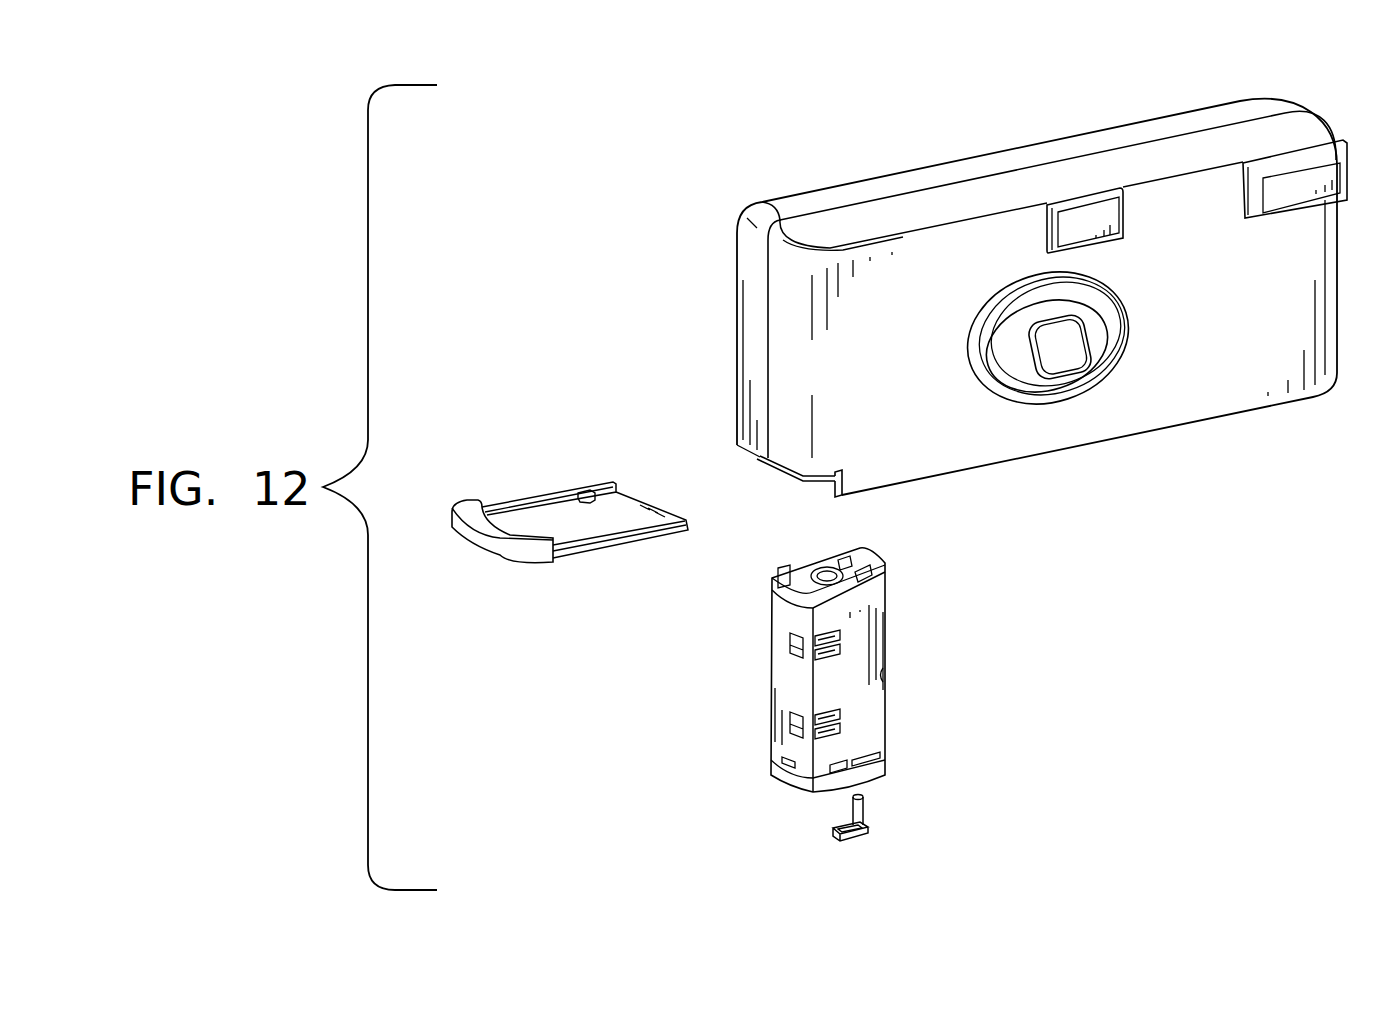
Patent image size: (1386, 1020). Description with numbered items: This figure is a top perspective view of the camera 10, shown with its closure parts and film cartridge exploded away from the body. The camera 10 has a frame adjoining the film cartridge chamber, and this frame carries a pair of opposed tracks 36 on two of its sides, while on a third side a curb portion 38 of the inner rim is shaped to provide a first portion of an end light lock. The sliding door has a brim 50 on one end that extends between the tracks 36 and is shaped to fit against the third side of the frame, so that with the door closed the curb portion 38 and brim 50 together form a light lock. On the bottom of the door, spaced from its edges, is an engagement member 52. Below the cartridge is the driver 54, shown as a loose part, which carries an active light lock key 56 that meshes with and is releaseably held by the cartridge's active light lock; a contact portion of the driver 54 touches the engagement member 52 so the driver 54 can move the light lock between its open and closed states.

The camera 10 is at (1200, 421).
The tracks 36 is at (834, 484).
The curb portion 38 is at (763, 462).
The brim 50 is at (465, 508).
The engagement member 52 is at (575, 495).
The driver 54 is at (868, 831).
The active light lock key 56 is at (863, 820).